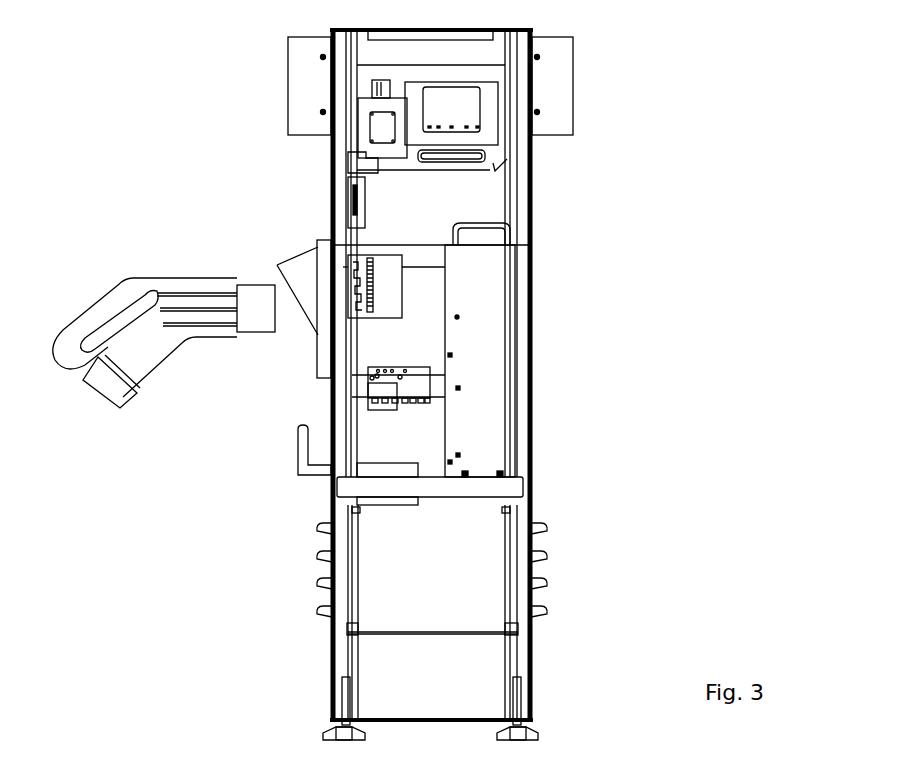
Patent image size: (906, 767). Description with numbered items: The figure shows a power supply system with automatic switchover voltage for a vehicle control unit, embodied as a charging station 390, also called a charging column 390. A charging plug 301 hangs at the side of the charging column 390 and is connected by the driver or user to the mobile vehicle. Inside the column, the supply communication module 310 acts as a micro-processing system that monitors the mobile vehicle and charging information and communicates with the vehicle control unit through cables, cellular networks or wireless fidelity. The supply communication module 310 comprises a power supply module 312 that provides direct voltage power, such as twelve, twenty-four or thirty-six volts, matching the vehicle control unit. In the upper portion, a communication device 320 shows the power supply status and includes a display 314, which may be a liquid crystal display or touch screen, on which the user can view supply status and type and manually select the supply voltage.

The charging plug 301 is at (185, 272).
The supply communication module 310 is at (347, 195).
The power supply module 312 is at (388, 300).
The display 314 is at (448, 110).
The communication device 320 is at (490, 101).
The charging station 390 is at (457, 624).